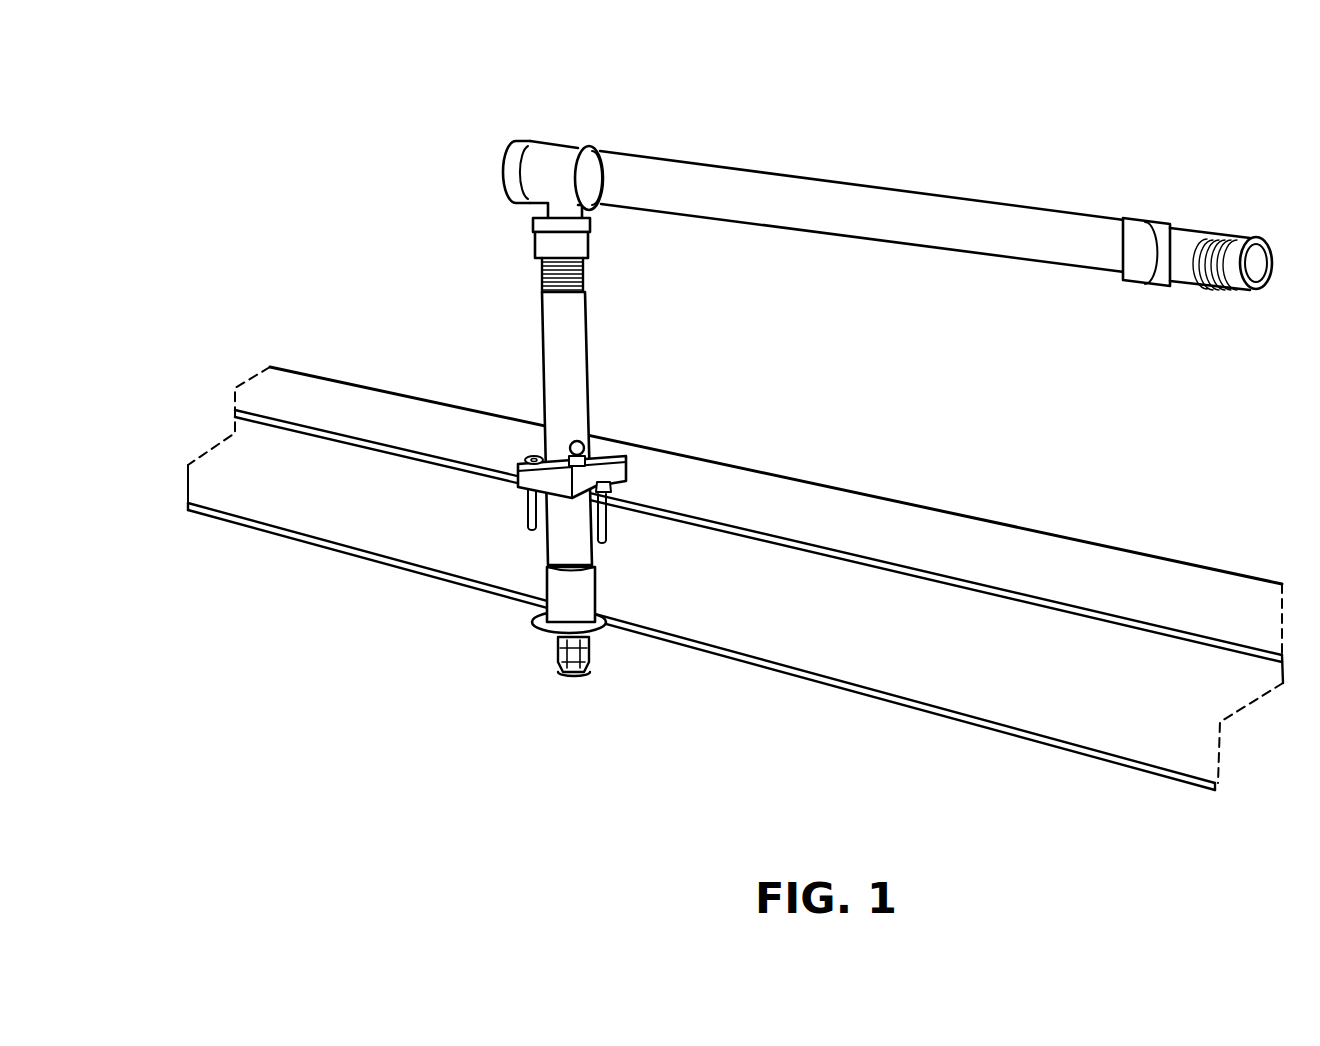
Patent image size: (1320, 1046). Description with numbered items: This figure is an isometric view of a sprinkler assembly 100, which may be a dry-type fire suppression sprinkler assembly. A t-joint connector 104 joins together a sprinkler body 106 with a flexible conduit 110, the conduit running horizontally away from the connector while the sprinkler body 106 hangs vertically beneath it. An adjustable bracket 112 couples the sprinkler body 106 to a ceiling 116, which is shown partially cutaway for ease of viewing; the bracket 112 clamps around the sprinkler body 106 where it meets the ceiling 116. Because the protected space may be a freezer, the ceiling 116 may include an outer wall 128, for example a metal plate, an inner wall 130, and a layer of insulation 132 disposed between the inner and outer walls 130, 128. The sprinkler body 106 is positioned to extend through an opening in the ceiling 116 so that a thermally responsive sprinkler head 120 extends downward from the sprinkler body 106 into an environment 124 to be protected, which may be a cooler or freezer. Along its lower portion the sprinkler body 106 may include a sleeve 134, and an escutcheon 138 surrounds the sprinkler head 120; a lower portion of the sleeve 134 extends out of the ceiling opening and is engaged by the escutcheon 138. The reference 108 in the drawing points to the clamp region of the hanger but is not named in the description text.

The sprinkler assembly 100 is at (704, 62).
The t-joint connector 104 is at (489, 151).
The sprinkler body 106 is at (571, 361).
The pipe clamp assembly 108 is at (507, 384).
The flexible conduit 110 is at (712, 185).
The adjustable bracket 112 is at (640, 470).
The ceiling 116 is at (973, 551).
The thermally responsive sprinkler head 120 is at (568, 691).
The environment 124 is at (718, 768).
The outer wall 128 is at (1190, 596).
The inner wall 130 is at (1086, 758).
The layer of insulation 132 is at (1010, 665).
The sleeve 134 is at (577, 589).
The escutcheon 138 is at (553, 634).